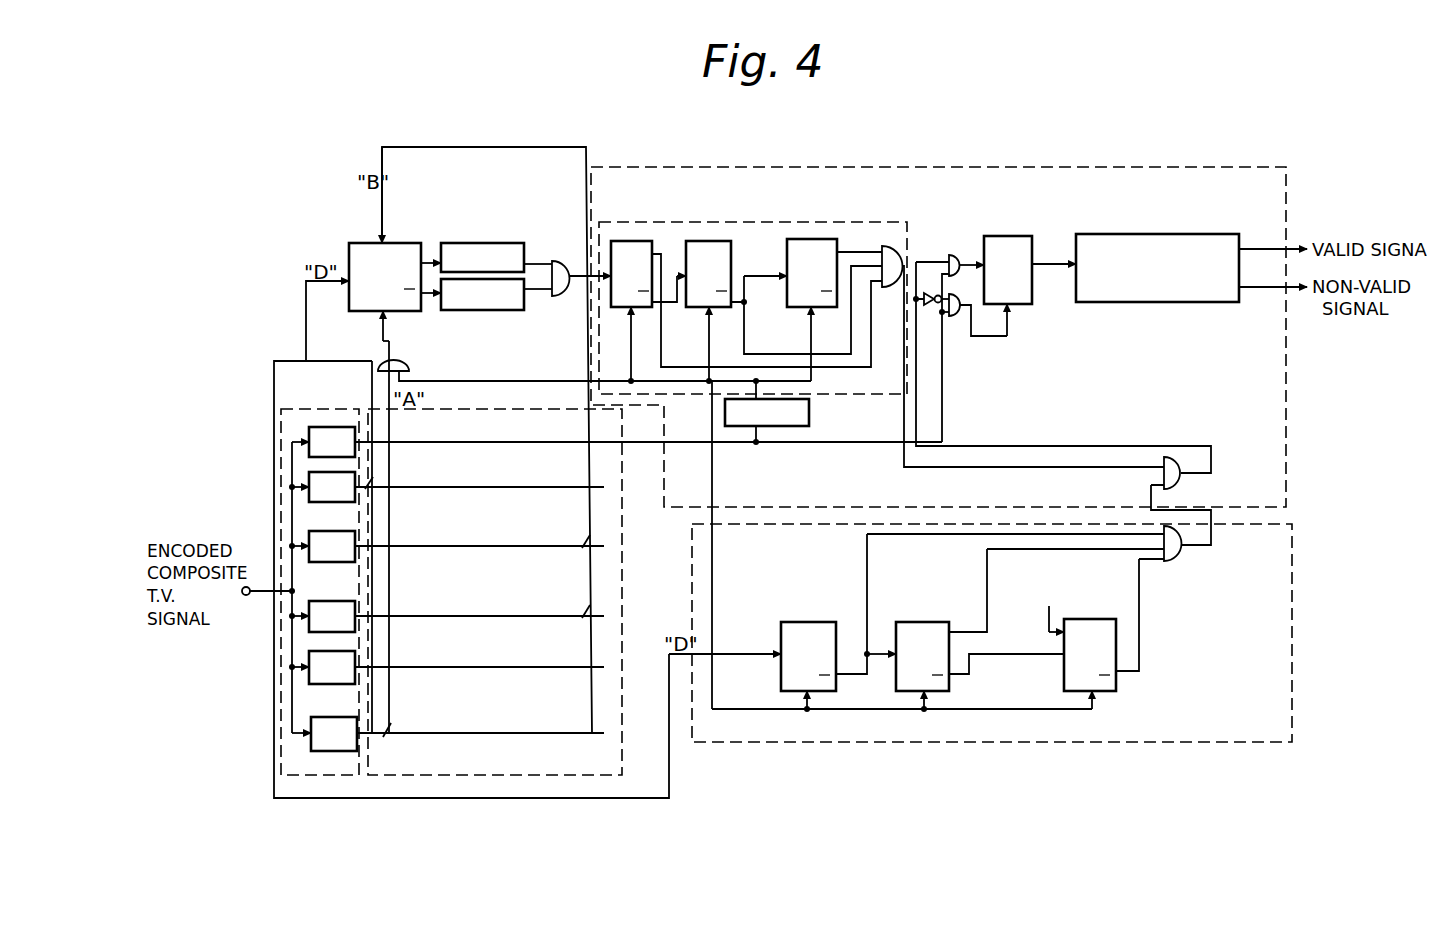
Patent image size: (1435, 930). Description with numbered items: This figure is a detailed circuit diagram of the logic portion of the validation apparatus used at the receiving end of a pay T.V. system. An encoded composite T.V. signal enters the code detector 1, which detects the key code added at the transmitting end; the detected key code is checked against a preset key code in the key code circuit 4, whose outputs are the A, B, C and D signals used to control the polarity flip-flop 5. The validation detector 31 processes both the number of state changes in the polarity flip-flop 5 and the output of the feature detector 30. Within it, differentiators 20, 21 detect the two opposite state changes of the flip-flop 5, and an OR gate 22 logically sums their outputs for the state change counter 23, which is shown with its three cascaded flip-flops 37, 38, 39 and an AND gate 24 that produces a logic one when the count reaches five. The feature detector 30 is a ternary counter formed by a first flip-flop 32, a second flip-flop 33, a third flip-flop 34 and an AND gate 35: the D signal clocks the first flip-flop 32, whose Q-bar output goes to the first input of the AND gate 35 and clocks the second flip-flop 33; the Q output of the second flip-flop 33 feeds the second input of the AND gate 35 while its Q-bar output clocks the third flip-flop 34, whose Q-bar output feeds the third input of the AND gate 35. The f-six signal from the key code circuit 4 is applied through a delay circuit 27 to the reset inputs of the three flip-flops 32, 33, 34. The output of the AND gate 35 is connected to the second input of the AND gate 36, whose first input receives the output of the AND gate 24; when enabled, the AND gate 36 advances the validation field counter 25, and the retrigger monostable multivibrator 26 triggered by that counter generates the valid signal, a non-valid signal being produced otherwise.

The code detector 1 is at (317, 409).
The key code circuit 4 is at (623, 598).
The polarity flip-flop 5 is at (410, 244).
The differentiator 20 is at (489, 244).
The differentiator 21 is at (488, 311).
The OR gate 22 is at (562, 297).
The state change counter 23 is at (760, 224).
The AND gate 24 is at (882, 244).
The validation field counter 25 is at (1003, 240).
The retrigger monostable multivibrator 26 is at (1135, 238).
The delay circuit 27 is at (810, 413).
The feature detector 30 is at (1192, 745).
The validation detector 31 is at (1026, 166).
The first flip-flop 32 is at (805, 623).
The second flip-flop 33 is at (928, 623).
The third flip-flop 34 is at (1088, 620).
The AND gate 35 is at (1175, 562).
The AND gate 36 is at (1170, 458).
The bistable 37 is at (634, 240).
The bistable 38 is at (709, 240).
The bistable 39 is at (825, 238).